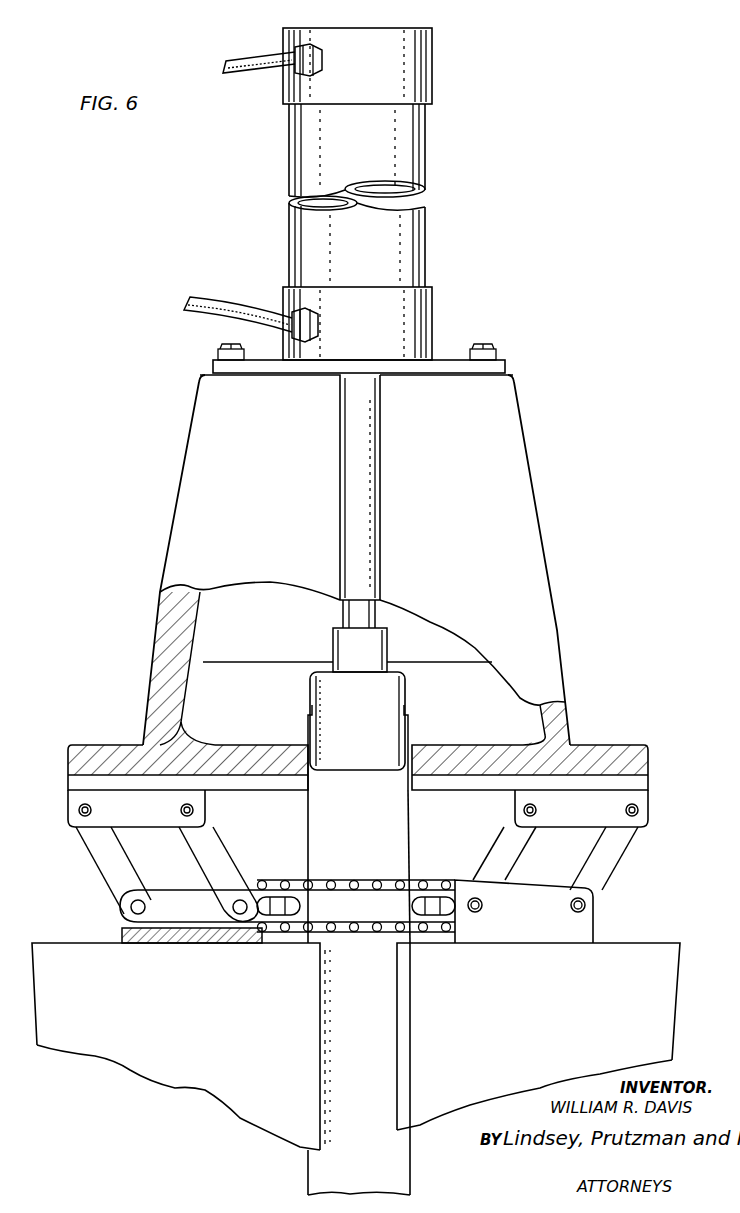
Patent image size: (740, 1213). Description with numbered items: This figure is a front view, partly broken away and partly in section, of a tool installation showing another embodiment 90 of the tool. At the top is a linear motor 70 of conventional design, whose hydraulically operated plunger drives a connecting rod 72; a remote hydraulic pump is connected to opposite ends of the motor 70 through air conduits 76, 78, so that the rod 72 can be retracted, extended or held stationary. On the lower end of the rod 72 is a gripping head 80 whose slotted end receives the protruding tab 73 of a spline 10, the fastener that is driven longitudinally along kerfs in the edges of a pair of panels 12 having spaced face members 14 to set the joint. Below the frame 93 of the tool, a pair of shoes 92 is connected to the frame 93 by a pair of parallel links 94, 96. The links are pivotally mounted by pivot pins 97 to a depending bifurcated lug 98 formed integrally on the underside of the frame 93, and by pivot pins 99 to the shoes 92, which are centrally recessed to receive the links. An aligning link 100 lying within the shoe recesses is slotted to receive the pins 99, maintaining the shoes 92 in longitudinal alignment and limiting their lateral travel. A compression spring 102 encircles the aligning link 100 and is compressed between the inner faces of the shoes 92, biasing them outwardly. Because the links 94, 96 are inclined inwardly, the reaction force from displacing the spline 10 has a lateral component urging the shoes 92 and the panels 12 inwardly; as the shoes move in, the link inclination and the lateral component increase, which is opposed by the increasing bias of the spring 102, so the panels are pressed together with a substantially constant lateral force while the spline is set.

The spline 10 is at (367, 1045).
The panels 12 is at (200, 1033).
The face members 14 is at (174, 1082).
The linear motor 70 is at (370, 243).
The connecting rod 72 is at (343, 616).
The protruding tab 73 is at (410, 740).
The air conduit 76 is at (230, 316).
The air conduit 78 is at (240, 70).
The gripping head 80 is at (367, 698).
The tool embodiment 90 is at (190, 406).
The shoes 92 is at (192, 942).
The frame 93 is at (446, 483).
The parallel link 94 is at (99, 860).
The parallel link 96 is at (194, 858).
The pivot pins 97 is at (79, 810).
The bifurcated lug 98 is at (144, 820).
The pivot pins 99 is at (131, 909).
The aligning link 100 is at (400, 916).
The compression spring 102 is at (442, 882).